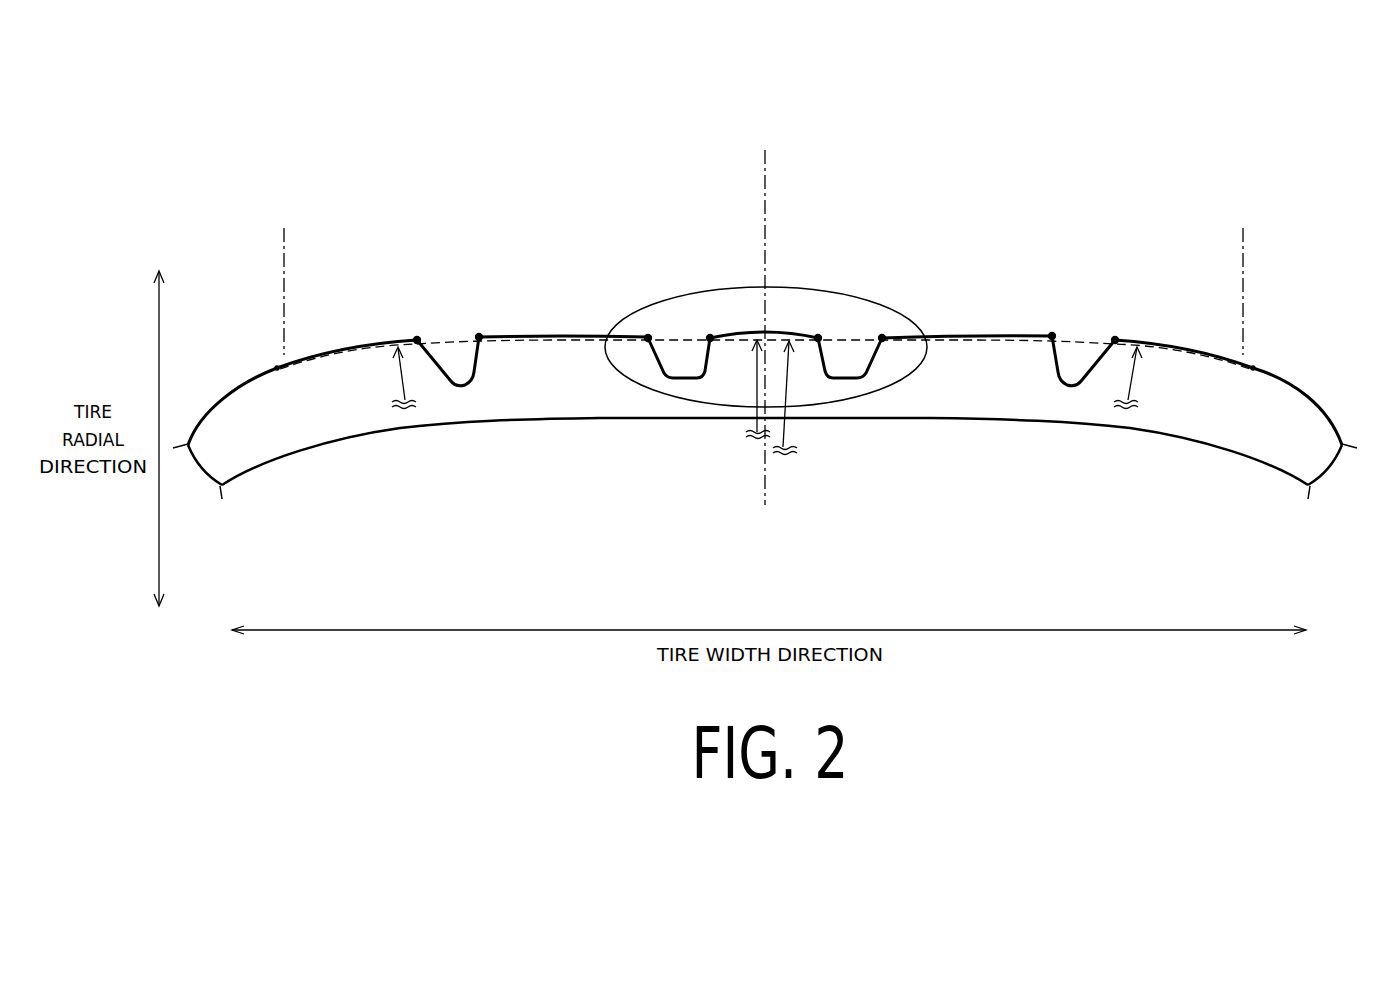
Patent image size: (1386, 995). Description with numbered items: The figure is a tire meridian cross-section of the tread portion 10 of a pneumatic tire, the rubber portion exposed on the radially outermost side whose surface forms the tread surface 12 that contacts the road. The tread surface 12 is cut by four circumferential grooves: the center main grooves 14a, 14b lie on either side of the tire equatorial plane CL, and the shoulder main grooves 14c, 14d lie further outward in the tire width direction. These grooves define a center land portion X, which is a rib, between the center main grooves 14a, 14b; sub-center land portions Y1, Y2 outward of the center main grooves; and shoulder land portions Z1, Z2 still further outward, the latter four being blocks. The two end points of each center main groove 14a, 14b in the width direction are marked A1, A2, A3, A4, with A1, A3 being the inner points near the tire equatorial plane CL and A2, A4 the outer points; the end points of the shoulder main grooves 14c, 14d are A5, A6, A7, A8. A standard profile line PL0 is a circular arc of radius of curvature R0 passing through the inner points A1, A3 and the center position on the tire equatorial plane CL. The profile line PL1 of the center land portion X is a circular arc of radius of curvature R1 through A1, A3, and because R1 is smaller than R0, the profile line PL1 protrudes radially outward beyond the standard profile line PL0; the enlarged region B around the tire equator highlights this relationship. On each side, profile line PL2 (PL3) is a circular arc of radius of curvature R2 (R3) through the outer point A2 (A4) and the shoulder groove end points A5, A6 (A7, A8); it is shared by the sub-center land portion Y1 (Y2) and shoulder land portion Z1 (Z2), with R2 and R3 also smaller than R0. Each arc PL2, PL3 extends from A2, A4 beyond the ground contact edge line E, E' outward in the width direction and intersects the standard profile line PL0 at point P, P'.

The tread portion 10 is at (603, 243).
The tread surface 12 is at (335, 352).
The circumferential groove (center main groove) 14a is at (685, 363).
The circumferential groove (center main groove) 14b is at (848, 365).
The circumferential groove (shoulder main groove) 14c is at (457, 372).
The circumferential groove (shoulder main groove) 14d is at (1073, 373).
The end point of center main groove A1 is at (710, 338).
The end point of center main groove A2 is at (648, 338).
The end point of center main groove A3 is at (818, 338).
The end point of center main groove A4 is at (882, 338).
The end point of shoulder main groove A5 is at (479, 337).
The end point of shoulder main groove A6 is at (417, 340).
The end point of shoulder main groove A7 is at (1052, 336).
The end point of shoulder main groove A8 is at (1115, 340).
The enlarged region indicator B is at (864, 303).
The tire equatorial plane CL is at (765, 312).
The ground contact edge line E is at (283, 277).
The ground contact edge line E' is at (1247, 277).
The intersection point P is at (253, 335).
The intersection point P' is at (1281, 330).
The standard profile line PL0 is at (515, 336).
The profile line of center land portion PL1 is at (740, 335).
The profile line PL2 is at (360, 345).
The profile line PL3 is at (1168, 340).
The radius of curvature R0 is at (794, 398).
The radius of curvature R1 is at (749, 389).
The radius of curvature R2 is at (394, 378).
The radius of curvature R3 is at (1138, 378).
The center land portion X is at (732, 357).
The sub-center land portion Y1 is at (557, 357).
The sub-center land portion Y2 is at (998, 357).
The shoulder land portion Z1 is at (352, 383).
The shoulder land portion Z2 is at (1225, 383).